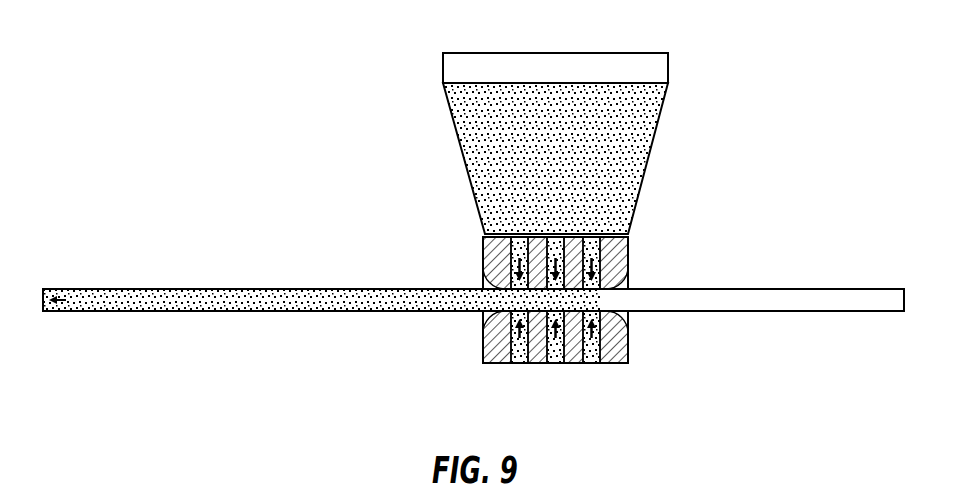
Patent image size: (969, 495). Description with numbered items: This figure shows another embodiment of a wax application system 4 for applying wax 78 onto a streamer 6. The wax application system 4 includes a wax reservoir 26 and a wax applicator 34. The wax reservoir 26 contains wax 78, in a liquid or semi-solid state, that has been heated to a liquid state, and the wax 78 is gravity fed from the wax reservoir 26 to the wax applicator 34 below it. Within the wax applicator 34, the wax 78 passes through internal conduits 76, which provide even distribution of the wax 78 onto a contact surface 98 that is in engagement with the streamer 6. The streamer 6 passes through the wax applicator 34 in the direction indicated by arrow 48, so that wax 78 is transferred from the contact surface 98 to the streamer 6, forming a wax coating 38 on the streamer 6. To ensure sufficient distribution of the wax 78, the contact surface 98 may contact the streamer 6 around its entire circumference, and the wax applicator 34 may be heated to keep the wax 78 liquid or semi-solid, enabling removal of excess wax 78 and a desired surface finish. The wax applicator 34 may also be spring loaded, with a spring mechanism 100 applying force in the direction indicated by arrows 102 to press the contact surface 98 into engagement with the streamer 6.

The wax application system 4 is at (288, 96).
The streamer 6 is at (473, 301).
The wax reservoir 26 is at (565, 143).
The wax applicator 34 is at (543, 279).
The wax coating 38 is at (473, 311).
The arrow 48 is at (93, 298).
The internal conduits 76 is at (500, 287).
The wax 78 is at (468, 137).
The contact surface 98 is at (627, 297).
The spring mechanism 100 is at (483, 240).
The arrows 102 is at (508, 263).